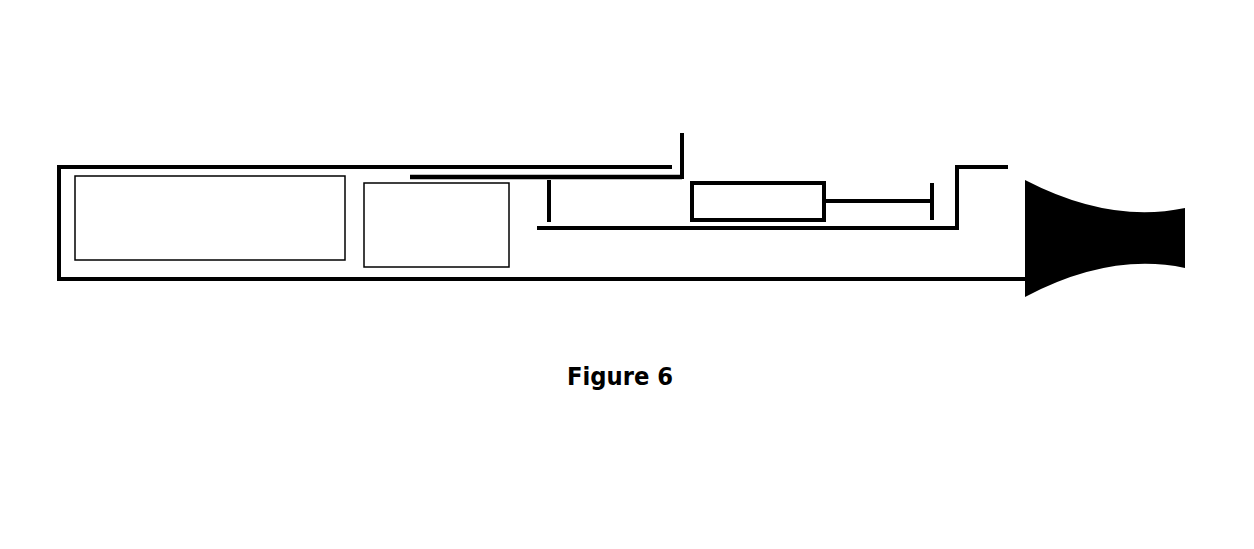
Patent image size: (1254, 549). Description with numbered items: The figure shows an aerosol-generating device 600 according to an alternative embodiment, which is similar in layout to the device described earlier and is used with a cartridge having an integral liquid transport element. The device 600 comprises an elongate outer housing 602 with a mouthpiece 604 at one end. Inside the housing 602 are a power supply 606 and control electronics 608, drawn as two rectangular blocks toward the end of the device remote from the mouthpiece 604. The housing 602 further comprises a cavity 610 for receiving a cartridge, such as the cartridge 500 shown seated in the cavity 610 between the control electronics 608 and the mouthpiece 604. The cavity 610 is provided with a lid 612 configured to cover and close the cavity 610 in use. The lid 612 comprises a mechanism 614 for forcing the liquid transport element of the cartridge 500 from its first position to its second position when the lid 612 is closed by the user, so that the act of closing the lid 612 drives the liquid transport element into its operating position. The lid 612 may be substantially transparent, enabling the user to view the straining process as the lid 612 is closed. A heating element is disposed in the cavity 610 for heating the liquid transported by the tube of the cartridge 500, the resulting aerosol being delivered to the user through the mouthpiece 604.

The device 600 is at (246, 366).
The outer housing 602 is at (160, 282).
The mouthpiece 604 is at (1093, 213).
The power supply 606 is at (182, 190).
The control electronics 608 is at (465, 263).
The cavity 610 is at (880, 180).
The lid 612 is at (685, 137).
The mechanism 614 is at (545, 193).
The cartridge 500 is at (747, 193).